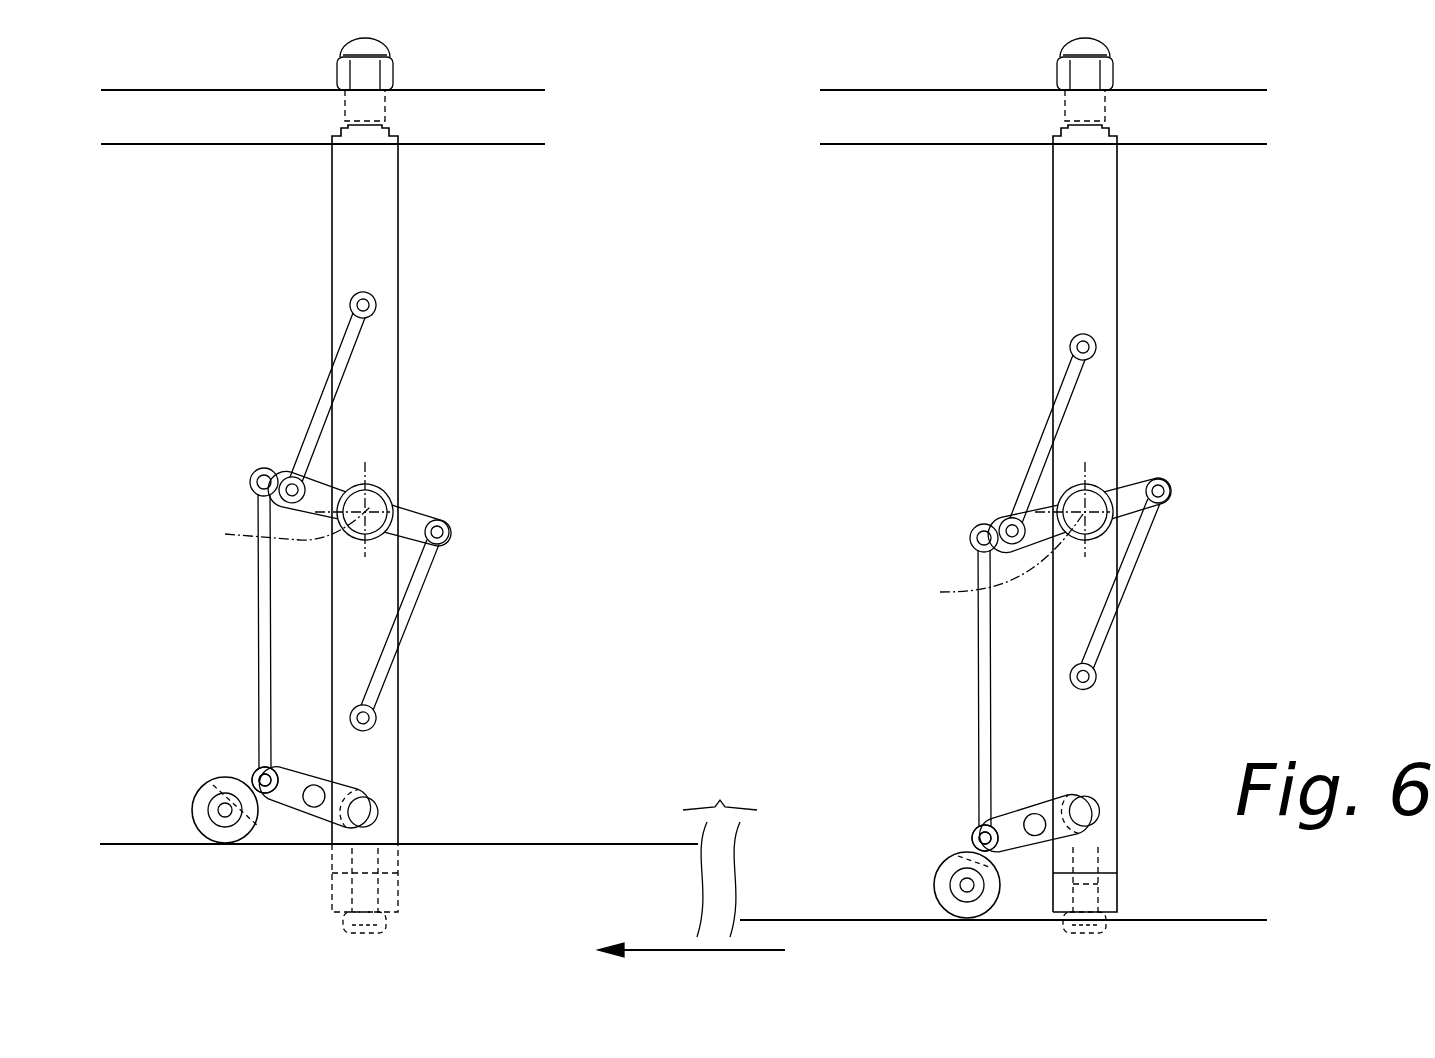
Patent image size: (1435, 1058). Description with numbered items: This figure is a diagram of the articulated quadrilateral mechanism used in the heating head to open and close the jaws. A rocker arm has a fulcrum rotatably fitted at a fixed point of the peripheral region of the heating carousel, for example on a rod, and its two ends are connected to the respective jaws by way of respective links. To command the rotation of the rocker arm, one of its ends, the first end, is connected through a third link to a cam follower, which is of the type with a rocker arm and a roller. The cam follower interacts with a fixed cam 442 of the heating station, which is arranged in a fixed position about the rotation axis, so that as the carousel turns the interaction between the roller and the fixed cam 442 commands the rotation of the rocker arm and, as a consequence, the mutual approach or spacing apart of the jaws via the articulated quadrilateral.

The fixed cam 442 is at (582, 843).